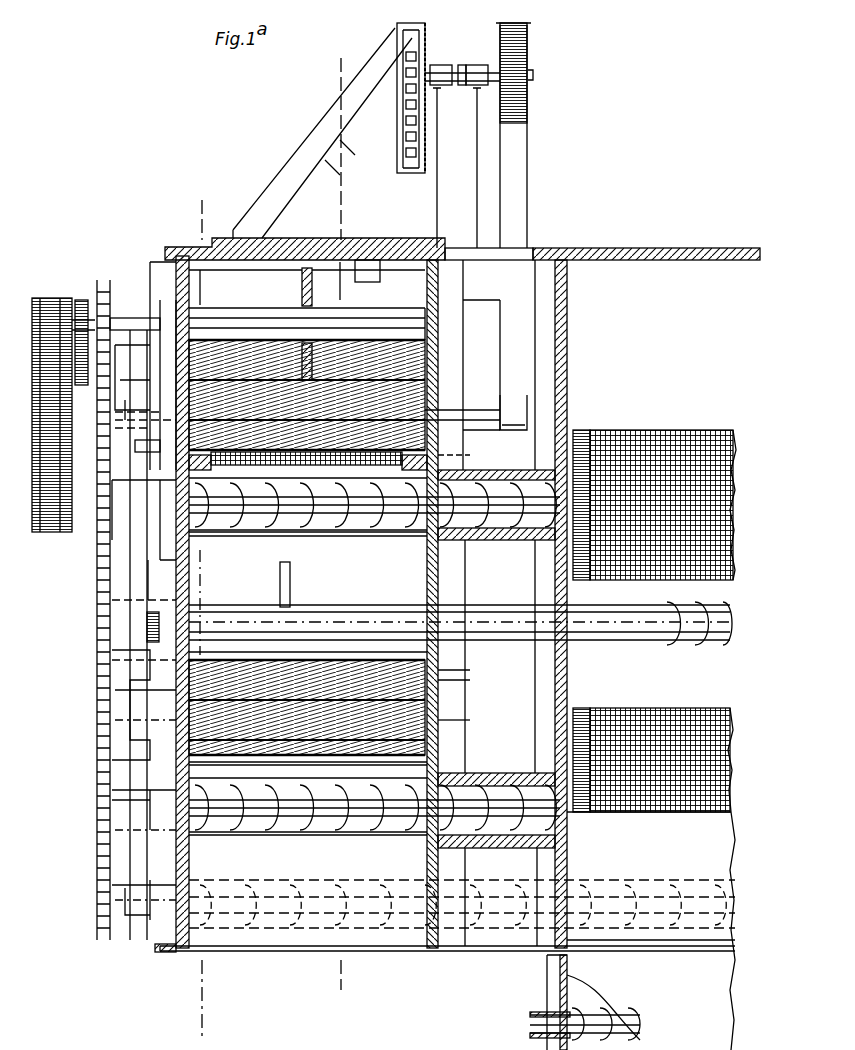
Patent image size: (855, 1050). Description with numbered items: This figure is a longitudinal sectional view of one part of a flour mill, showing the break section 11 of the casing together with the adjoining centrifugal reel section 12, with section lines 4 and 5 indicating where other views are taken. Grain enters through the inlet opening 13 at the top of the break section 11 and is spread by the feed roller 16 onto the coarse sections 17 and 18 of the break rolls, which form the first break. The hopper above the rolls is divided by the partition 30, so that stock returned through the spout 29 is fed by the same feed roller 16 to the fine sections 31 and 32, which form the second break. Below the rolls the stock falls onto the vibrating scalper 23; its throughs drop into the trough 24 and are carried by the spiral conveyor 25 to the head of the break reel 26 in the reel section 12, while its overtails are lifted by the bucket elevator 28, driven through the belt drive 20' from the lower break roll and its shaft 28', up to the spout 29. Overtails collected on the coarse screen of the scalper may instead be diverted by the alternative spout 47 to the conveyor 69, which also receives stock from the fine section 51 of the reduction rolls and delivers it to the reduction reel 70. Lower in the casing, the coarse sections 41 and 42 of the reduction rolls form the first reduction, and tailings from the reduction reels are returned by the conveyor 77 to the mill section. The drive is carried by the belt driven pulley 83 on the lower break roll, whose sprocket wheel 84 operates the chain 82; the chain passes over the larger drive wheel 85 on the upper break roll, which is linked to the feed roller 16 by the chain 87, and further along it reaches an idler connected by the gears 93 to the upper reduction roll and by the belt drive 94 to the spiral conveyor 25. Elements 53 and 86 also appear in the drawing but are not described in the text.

The section line 4- 4 is at (203, 612).
The section line 5- 5 is at (339, 525).
The break section 11 is at (345, 247).
The centrifugal reel section 12 is at (630, 249).
The inlet opening 13 is at (382, 278).
The feed roller 16 is at (222, 305).
The coarse section 17 is at (440, 350).
The coarse section 18 is at (440, 402).
The belt drive 20' is at (530, 135).
The vibrating scalper 23 is at (468, 456).
The trough 24 is at (240, 532).
The spiral conveyor 25 is at (325, 528).
The break reel 26 is at (684, 432).
The bucket elevator 28 is at (390, 99).
The shaft 28' is at (462, 59).
The spout 29 is at (310, 160).
The partition 30 is at (302, 282).
The fine section 31 is at (253, 345).
The fine section 32 is at (176, 372).
The coarse section 41 is at (440, 672).
The coarse section 42 is at (440, 724).
The alternative spout 47 is at (248, 590).
The fine section 51 is at (242, 680).
The roller 53 is at (308, 774).
The conveyor 69 is at (374, 823).
The reduction reel 70 is at (650, 710).
The conveyor 77 is at (722, 915).
The chain 82 is at (112, 695).
The belt driven pulley 83 is at (52, 298).
The sprocket wheel 84 is at (145, 432).
The drive wheel 85 is at (100, 285).
The shaft 86 is at (128, 318).
The chain 87 is at (80, 302).
The gears 93 is at (112, 628).
The belt drive 94 is at (97, 550).